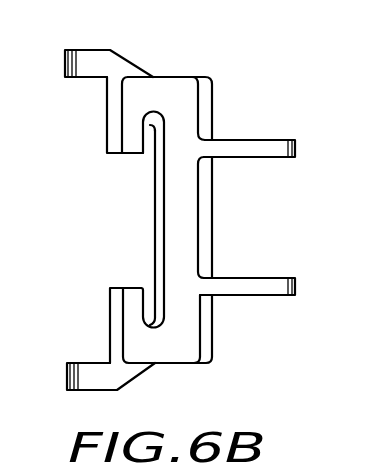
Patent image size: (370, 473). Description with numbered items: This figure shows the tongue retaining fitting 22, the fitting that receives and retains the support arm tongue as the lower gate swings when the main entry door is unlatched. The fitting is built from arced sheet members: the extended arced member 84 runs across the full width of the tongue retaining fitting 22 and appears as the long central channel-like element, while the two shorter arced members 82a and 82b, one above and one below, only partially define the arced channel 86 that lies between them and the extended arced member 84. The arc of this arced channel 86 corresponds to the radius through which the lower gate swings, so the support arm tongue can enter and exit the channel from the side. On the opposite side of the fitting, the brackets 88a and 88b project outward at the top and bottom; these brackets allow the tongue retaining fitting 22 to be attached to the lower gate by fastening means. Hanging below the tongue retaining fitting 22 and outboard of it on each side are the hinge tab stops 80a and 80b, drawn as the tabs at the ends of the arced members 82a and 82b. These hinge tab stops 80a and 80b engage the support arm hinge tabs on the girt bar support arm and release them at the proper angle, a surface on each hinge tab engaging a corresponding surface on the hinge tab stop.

The tongue retaining fitting 22 is at (178, 214).
The hinge tab stop 80a is at (95, 50).
The hinge tab stop 80b is at (118, 389).
The arced member 82a is at (107, 145).
The arced member 82b is at (110, 323).
The extended arced member 84 is at (121, 220).
The arced channel 86 is at (150, 135).
The bracket 88a is at (318, 121).
The bracket 88b is at (330, 307).